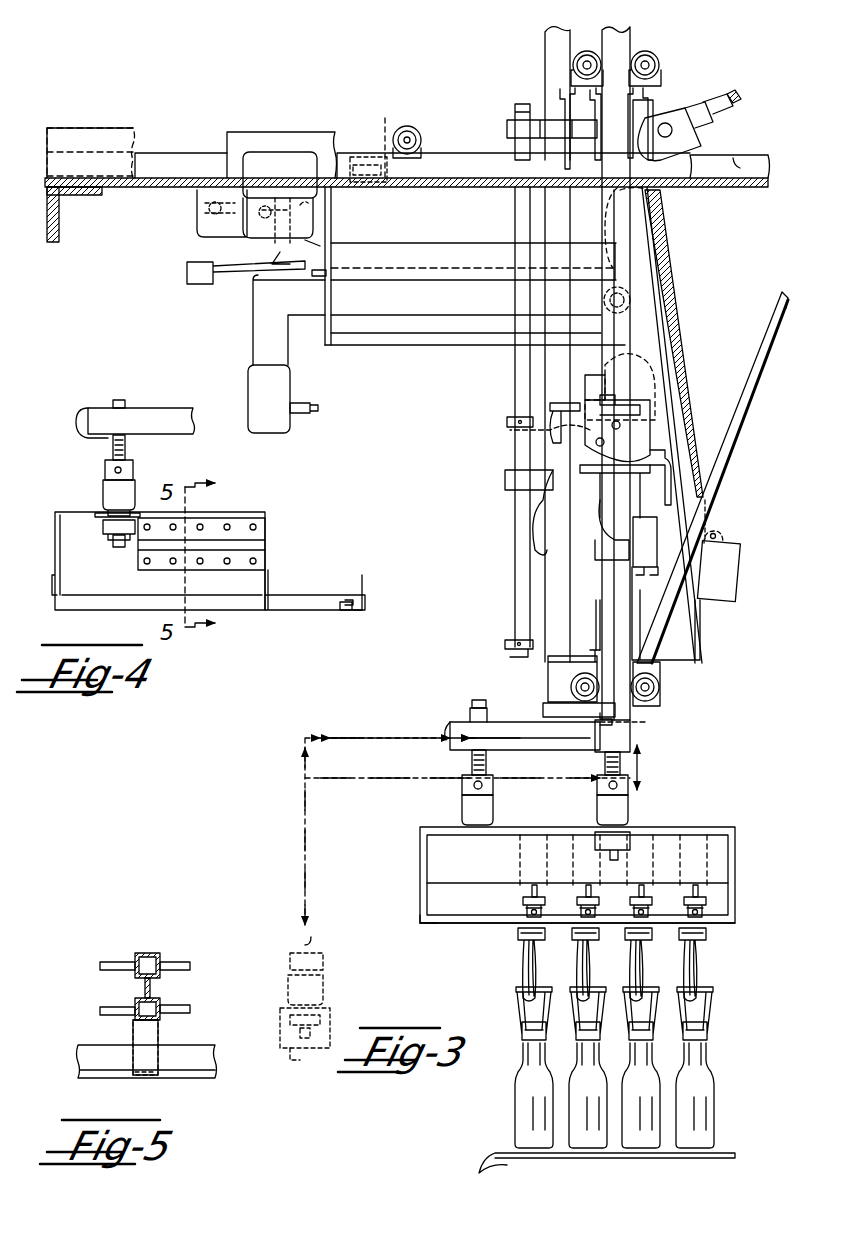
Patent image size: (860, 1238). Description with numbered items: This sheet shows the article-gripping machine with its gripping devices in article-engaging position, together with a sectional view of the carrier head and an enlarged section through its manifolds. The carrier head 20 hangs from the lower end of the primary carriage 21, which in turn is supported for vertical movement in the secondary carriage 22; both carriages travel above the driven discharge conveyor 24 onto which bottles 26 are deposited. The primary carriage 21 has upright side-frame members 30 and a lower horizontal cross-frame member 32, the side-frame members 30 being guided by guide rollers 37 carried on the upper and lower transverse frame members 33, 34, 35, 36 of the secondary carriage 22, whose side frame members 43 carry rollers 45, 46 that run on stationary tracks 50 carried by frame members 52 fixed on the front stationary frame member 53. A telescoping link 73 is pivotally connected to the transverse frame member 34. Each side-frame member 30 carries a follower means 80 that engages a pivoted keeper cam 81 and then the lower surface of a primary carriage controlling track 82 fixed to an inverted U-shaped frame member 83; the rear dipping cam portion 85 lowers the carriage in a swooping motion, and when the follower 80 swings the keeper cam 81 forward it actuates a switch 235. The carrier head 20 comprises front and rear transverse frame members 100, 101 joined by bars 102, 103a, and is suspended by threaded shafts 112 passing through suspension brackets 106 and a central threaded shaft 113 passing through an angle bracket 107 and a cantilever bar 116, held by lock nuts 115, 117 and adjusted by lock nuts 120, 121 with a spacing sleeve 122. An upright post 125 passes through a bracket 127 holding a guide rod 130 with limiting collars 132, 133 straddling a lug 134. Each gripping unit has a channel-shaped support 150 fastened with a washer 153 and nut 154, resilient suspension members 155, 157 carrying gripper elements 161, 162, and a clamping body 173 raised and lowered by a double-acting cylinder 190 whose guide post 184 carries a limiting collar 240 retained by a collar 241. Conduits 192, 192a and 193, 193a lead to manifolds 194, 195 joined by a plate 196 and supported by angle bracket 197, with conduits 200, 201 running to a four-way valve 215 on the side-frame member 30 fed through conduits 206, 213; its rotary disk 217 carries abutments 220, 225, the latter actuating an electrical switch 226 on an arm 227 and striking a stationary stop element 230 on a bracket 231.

In FIG. 3, the carrier head 20 is at (418, 905).
In FIG. 4, the carrier head 20 is at (366, 576).
In FIG. 5, the carrier head 20 is at (78, 1058).
In FIG. 3, the primary carriage 21 is at (630, 734).
In FIG. 3, the secondary carriage 22 is at (666, 56).
In FIG. 3, the discharge conveyor 24 is at (732, 1158).
In FIG. 3, the bottles 26 is at (575, 1110).
In FIG. 3, the upright side-frame members 30 is at (628, 38).
In FIG. 3, the lower horizontal cross-frame member 32 is at (650, 720).
In FIG. 3, the upper transverse frame member 33 is at (577, 94).
In FIG. 3, the upper transverse frame member 34 is at (660, 96).
In FIG. 3, the lower transverse frame member 35 is at (560, 642).
In FIG. 3, the lower transverse frame member 36 is at (650, 635).
In FIG. 3, the guide rollers 37 is at (573, 62).
In FIG. 3, the side frame members 43 is at (736, 152).
In FIG. 3, the rollers 45 is at (363, 157).
In FIG. 3, the rollers 46 is at (400, 126).
In FIG. 3, the stationary tracks 50 is at (176, 154).
In FIG. 3, the frame members 52 is at (90, 130).
In FIG. 3, the front stationary frame member 53 is at (59, 222).
In FIG. 3, the telescoping link 73 is at (732, 98).
In FIG. 3, the follower means 80 is at (604, 300).
In FIG. 3, the keeper cam 81 is at (325, 245).
In FIG. 3, the primary carriage controlling tracks 82 is at (434, 246).
In FIG. 3, the inverted U-shaped frame member 83 is at (388, 350).
In FIG. 3, the dipping cam portion 85 is at (664, 266).
In FIG. 3, the front transverse frame member 100 is at (420, 915).
In FIG. 4, the front transverse frame member 100 is at (55, 602).
In FIG. 3, the rear transverse frame member 101 is at (735, 916).
In FIG. 4, the rear transverse frame member 101 is at (364, 592).
In FIG. 5, the rear transverse frame member 101 is at (212, 1056).
In FIG. 3, the bars 102 is at (448, 920).
In FIG. 4, the bar 103a is at (141, 612).
In FIG. 3, the suspension bracket 106 is at (712, 827).
In FIG. 4, the angle bracket 107 is at (56, 513).
In FIG. 3, the threaded shaft 112 is at (631, 772).
In FIG. 3, the central threaded shaft 113 is at (479, 700).
In FIG. 4, the central threaded shaft 113 is at (120, 398).
In FIG. 3, the lock nuts 115 is at (622, 758).
In FIG. 3, the cantilever bar 116 is at (450, 733).
In FIG. 4, the cantilever bar 116 is at (152, 414).
In FIG. 3, the lock nuts 117 is at (458, 720).
In FIG. 4, the lock nuts 117 is at (80, 427).
In FIG. 3, the lock nut 120 is at (602, 838).
In FIG. 4, the lock nut 120 is at (106, 532).
In FIG. 3, the lock nut 121 is at (462, 786).
In FIG. 4, the lock nut 121 is at (133, 467).
In FIG. 3, the spacing sleeve 122 is at (492, 802).
In FIG. 4, the spacing sleeve 122 is at (103, 490).
In FIG. 3, the upright post 125 is at (550, 549).
In FIG. 3, the bracket 127 is at (506, 128).
In FIG. 3, the guide rod 130 is at (512, 382).
In FIG. 3, the limiting collar 132 is at (506, 422).
In FIG. 3, the limiting collar 133 is at (504, 645).
In FIG. 3, the lug 134 is at (504, 480).
In FIG. 3, the channel-shaped support 150 is at (512, 920).
In FIG. 3, the washer 153 is at (735, 905).
In FIG. 3, the nut 154 is at (735, 895).
In FIG. 3, the suspension member 155 is at (528, 953).
In FIG. 3, the suspension member 157 is at (520, 956).
In FIG. 3, the gripper element 161 is at (518, 1042).
In FIG. 3, the gripper element 162 is at (545, 1047).
In FIG. 3, the clamping body 173 is at (514, 988).
In FIG. 3, the guide post 184 is at (524, 890).
In FIG. 3, the double-acting cylinder 190 is at (728, 836).
In FIG. 4, the conduit 192 is at (224, 564).
In FIG. 5, the conduit 192a is at (106, 1012).
In FIG. 4, the conduit 193 is at (254, 525).
In FIG. 5, the conduit 193a is at (98, 958).
In FIG. 4, the lower manifold 194 is at (247, 559).
In FIG. 5, the lower manifold 194 is at (162, 1002).
In FIG. 4, the upper manifold 195 is at (214, 519).
In FIG. 5, the upper manifold 195 is at (147, 953).
In FIG. 4, the plate 196 is at (264, 541).
In FIG. 5, the plate 196 is at (160, 990).
In FIG. 4, the angle bracket 197 is at (270, 592).
In FIG. 5, the angle bracket 197 is at (160, 1035).
In FIG. 5, the conduit 200 is at (192, 1011).
In FIG. 5, the conduit 201 is at (190, 962).
In FIG. 3, the conduit 206 is at (548, 403).
In FIG. 3, the conduit 213 is at (662, 450).
In FIG. 3, the four-way valve 215 is at (630, 440).
In FIG. 3, the rotary disk 217 is at (600, 432).
In FIG. 3, the abutment 220 is at (595, 444).
In FIG. 3, the abutment 225 is at (584, 428).
In FIG. 3, the electrical switch 226 is at (292, 385).
In FIG. 3, the arm 227 is at (253, 320).
In FIG. 3, the stationary stop element 230 is at (603, 392).
In FIG. 3, the bracket 231 is at (642, 330).
In FIG. 3, the switch 235 is at (267, 248).
In FIG. 3, the limiting collar 240 is at (614, 907).
In FIG. 3, the collar 241 is at (542, 884).